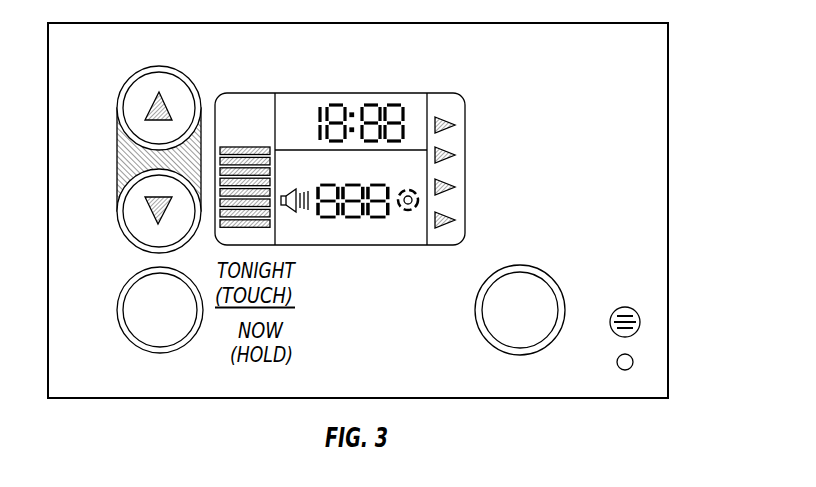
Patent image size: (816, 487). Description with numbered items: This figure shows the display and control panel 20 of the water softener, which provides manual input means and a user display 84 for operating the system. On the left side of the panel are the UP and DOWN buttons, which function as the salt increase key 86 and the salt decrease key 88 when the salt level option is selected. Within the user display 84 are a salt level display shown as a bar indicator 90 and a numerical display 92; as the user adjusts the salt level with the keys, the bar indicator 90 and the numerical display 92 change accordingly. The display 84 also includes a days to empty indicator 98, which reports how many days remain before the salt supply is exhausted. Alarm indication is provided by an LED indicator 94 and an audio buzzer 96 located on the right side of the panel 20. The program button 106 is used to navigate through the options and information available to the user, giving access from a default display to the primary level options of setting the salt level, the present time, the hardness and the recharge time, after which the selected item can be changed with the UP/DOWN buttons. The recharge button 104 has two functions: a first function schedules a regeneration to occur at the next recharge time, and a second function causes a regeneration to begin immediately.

The display and control panel 20 is at (668, 75).
The user display 84 is at (320, 93).
The salt increase key 86 is at (137, 102).
The salt decrease key 88 is at (138, 227).
The bar indicator 90 is at (242, 213).
The numerical display 92 is at (373, 103).
The LED indicator 94 is at (616, 368).
The audio buzzer 96 is at (625, 306).
The days to empty indicator 98 is at (360, 216).
The recharge button 104 is at (127, 336).
The program button 106 is at (487, 335).